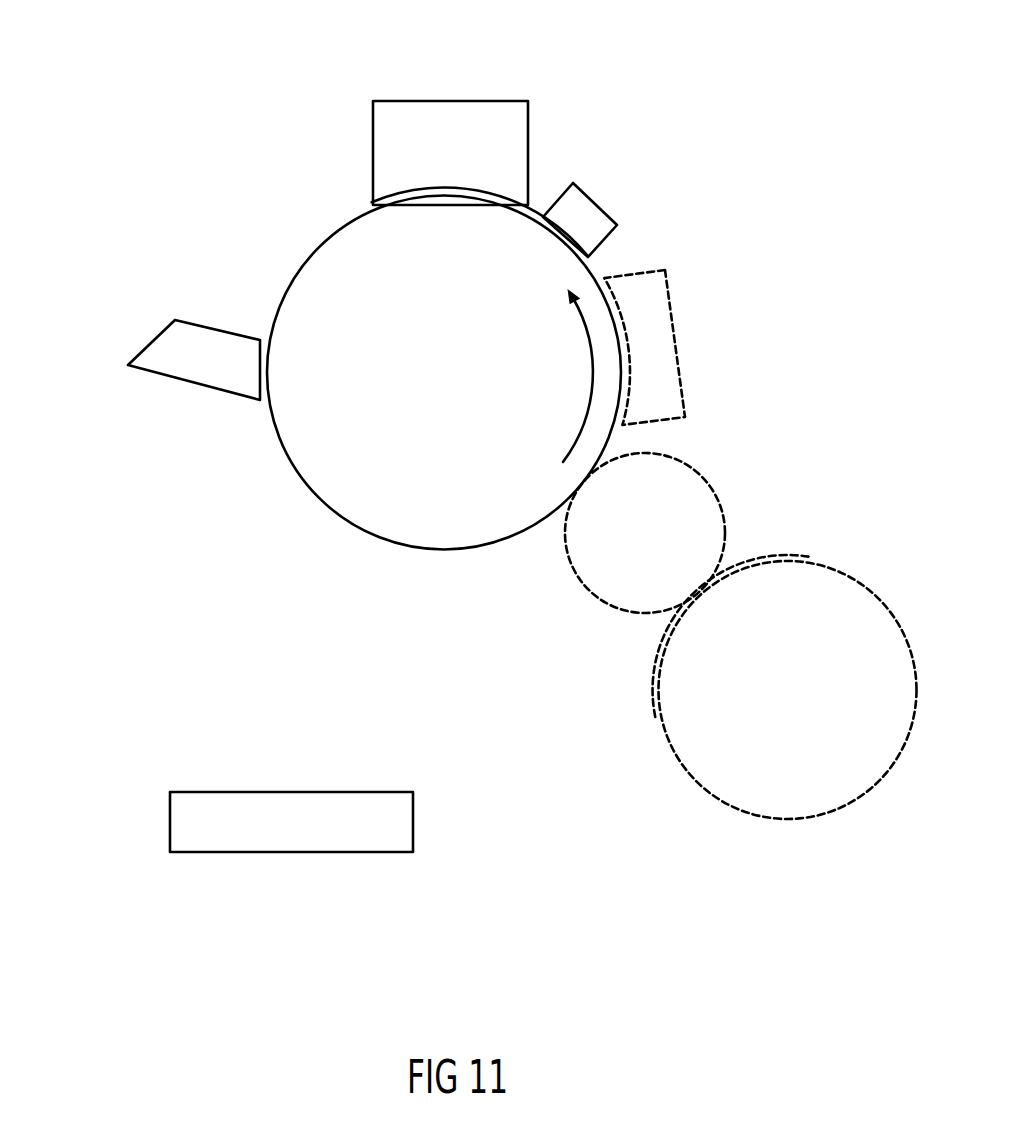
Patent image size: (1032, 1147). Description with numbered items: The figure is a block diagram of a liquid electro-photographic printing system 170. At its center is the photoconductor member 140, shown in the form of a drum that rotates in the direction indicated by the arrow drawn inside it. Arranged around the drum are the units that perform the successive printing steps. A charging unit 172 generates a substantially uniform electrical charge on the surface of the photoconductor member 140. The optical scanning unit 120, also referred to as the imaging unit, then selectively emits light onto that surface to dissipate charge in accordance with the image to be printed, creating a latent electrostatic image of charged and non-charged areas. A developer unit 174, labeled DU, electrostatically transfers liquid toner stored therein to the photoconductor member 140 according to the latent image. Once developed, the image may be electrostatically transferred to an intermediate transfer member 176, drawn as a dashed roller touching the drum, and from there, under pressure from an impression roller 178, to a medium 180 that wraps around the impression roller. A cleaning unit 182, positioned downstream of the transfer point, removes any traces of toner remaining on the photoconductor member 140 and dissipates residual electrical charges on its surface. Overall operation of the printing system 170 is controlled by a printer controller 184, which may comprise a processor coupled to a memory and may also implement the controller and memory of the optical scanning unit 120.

The optical scanning unit 120 is at (452, 101).
The photoconductor member 140 is at (303, 265).
The printing system 170 is at (136, 164).
The charging unit 172 is at (597, 203).
The developer unit 174 is at (153, 337).
The intermediate transfer member 176 is at (717, 500).
The impression roller 178 is at (785, 820).
The medium 180 is at (807, 562).
The cleaning unit 182 is at (677, 340).
The printer controller 184 is at (292, 852).